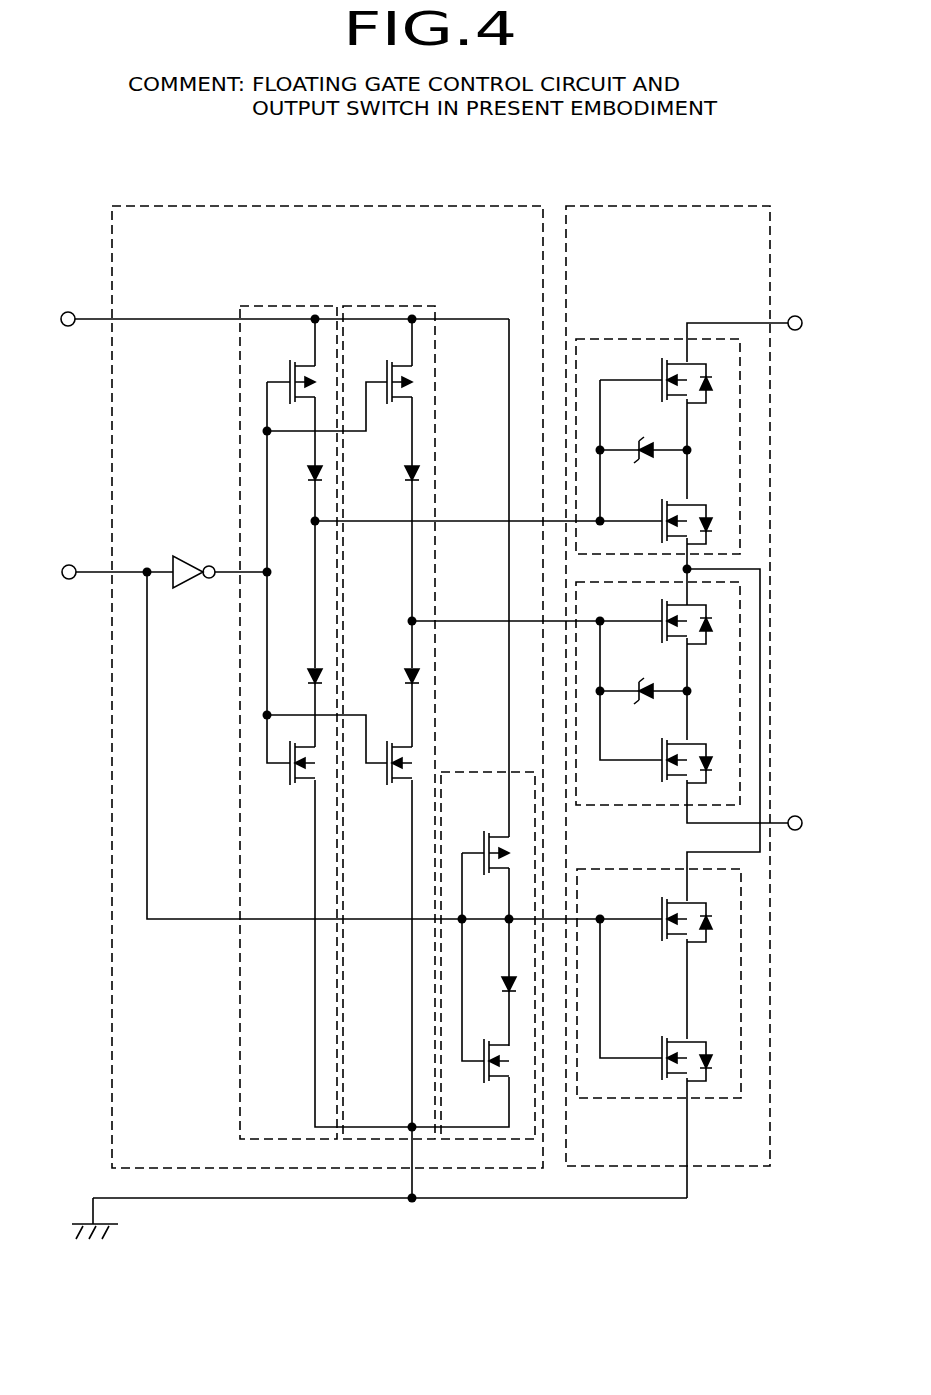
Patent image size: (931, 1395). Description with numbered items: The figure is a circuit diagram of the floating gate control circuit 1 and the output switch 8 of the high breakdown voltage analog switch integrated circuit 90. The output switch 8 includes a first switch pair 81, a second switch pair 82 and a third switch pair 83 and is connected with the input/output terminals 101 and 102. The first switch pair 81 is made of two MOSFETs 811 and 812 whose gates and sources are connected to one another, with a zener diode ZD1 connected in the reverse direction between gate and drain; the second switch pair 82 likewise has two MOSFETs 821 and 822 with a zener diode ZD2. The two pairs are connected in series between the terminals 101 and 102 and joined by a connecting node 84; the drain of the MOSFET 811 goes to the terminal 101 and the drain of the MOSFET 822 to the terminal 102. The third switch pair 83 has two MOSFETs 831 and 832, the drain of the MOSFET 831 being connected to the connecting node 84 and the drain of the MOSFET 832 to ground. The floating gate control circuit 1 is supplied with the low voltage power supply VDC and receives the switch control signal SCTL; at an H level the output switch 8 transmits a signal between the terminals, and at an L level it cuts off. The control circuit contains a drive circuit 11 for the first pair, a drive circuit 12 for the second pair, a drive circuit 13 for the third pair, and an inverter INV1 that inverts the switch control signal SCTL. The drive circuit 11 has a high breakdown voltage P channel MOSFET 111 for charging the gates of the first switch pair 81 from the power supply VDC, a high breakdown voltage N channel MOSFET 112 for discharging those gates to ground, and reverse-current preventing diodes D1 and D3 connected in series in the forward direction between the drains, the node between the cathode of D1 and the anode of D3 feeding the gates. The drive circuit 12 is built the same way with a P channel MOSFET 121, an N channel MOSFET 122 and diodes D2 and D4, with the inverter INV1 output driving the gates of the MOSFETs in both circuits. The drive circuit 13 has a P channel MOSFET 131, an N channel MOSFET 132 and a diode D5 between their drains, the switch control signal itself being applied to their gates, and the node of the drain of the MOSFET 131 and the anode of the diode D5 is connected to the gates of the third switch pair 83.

The high breakdown voltage analog switch integrated circuit 90 is at (715, 181).
The floating gate control circuit 1 is at (303, 202).
The output switch 8 is at (624, 202).
The drive circuit 11 is at (283, 304).
The drive circuit 12 is at (377, 304).
The drive circuit 13 is at (487, 771).
The high breakdown voltage P channel MOSFET 111 is at (288, 370).
The high breakdown voltage N channel MOSFET 112 is at (289, 781).
The high breakdown voltage P channel MOSFET 121 is at (386, 370).
The high breakdown voltage N channel MOSFET 122 is at (386, 781).
The high breakdown voltage P channel MOSFET 131 is at (483, 834).
The N channel MOSFET 132 is at (483, 1079).
The high breakdown voltage diode D1 is at (307, 472).
The high breakdown voltage diode D2 is at (405, 472).
The high breakdown voltage diode D3 is at (307, 670).
The high breakdown voltage diode D4 is at (405, 670).
The high breakdown voltage diode D5 is at (502, 975).
The inverter INV1 is at (172, 558).
The low voltage power supply VDC is at (278, 338).
The switch control signal SCTL is at (106, 591).
The first switch pair 81 is at (603, 338).
The second switch pair 82 is at (601, 806).
The third switch pair 83 is at (719, 1099).
The connecting node 84 is at (760, 560).
The MOSFET 811 is at (660, 370).
The MOSFET 812 is at (660, 508).
The MOSFET 821 is at (660, 614).
The MOSFET 822 is at (660, 750).
The MOSFET 831 is at (660, 900).
The MOSFET 832 is at (660, 1050).
The zener diode ZD1 is at (657, 431).
The zener diode ZD2 is at (657, 673).
The input/output terminal 101 is at (796, 316).
The input/output terminal 102 is at (797, 815).